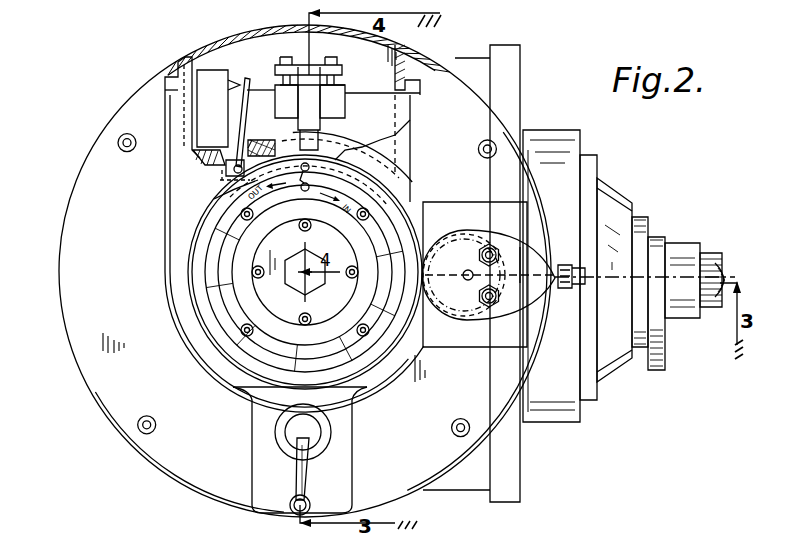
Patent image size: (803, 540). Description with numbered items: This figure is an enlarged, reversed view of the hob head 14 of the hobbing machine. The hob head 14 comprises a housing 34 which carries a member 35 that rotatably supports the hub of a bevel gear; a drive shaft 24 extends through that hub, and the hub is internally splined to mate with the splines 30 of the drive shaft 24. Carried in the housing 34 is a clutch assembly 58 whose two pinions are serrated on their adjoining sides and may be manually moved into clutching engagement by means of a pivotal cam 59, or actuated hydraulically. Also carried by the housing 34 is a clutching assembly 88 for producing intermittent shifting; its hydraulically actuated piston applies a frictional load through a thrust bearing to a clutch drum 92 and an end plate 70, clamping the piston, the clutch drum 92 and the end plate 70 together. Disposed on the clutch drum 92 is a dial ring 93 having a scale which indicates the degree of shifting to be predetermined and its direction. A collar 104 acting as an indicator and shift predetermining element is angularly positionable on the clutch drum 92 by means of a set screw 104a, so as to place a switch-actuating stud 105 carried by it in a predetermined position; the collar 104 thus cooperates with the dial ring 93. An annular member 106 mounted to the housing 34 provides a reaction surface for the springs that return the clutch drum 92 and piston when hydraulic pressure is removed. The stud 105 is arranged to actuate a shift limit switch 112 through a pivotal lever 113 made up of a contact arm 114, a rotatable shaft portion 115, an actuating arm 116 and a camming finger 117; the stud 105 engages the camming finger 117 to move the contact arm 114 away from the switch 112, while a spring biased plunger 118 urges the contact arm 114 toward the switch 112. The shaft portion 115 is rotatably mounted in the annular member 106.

The hob head 14 is at (559, 98).
The drive shaft 24 is at (718, 290).
The splines 30 is at (712, 250).
The housing 34 is at (473, 474).
The member 35 is at (613, 358).
The clutch assembly 58 is at (275, 428).
The pivotal cam 59 is at (315, 435).
The end plate 70 is at (292, 313).
The clutching assembly 88 is at (405, 208).
The clutch drum 92 is at (383, 323).
The dial ring 93 is at (352, 344).
The collar 104 is at (227, 340).
The set screw 104a is at (475, 274).
The switch-actuating stud 105 is at (310, 166).
The annular member 106 is at (415, 172).
The shift limit switch 112 is at (208, 74).
The pivotal lever 113 is at (248, 75).
The contact arm 114 is at (243, 113).
The rotatable shaft portion 115 is at (208, 163).
The actuating arm 116 is at (214, 199).
The camming finger 117 is at (303, 191).
The spring biased plunger 118 is at (263, 123).